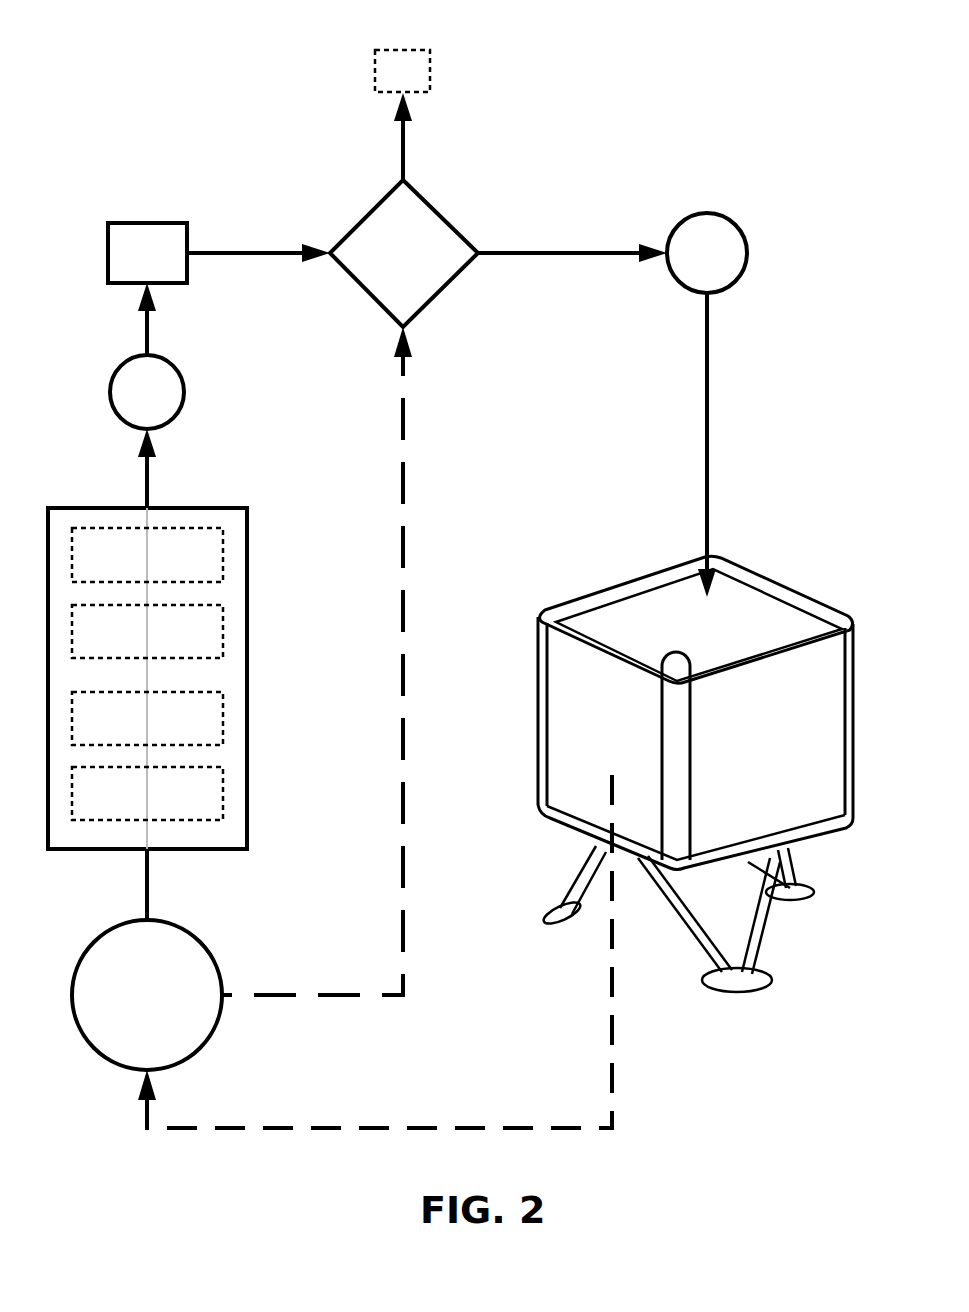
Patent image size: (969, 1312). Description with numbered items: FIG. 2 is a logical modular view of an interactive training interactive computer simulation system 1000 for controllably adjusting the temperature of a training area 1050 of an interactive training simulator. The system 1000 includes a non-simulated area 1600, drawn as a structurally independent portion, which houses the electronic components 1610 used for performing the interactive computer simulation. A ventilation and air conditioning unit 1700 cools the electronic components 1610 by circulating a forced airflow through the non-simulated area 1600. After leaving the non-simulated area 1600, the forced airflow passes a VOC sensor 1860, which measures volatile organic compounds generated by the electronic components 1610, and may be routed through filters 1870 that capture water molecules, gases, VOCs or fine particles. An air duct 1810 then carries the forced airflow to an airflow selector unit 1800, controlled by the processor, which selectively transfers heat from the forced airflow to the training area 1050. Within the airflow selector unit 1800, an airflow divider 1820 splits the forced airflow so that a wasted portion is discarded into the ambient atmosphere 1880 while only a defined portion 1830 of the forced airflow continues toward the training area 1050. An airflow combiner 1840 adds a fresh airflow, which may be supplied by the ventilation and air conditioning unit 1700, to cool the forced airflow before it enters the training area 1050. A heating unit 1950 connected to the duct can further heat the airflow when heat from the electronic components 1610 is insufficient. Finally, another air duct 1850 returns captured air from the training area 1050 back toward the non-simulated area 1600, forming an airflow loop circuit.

The interactive training interactive computer simulation system 1000 is at (238, 97).
The training area 1050 is at (660, 603).
The non-simulated area 1600 is at (248, 680).
The electronic components 1610 is at (224, 550).
The ventilation and air conditioning unit 1700 is at (212, 955).
The airflow selector unit 1800 is at (443, 212).
The air duct 1810 is at (264, 250).
The airflow divider 1820 is at (405, 142).
The defined portion of the forced airflow 1830 is at (560, 252).
The airflow combiner 1840 is at (406, 435).
The air duct 1850 is at (462, 1128).
The VOC sensor 1860 is at (186, 392).
The filters 1870 is at (190, 224).
The ambient atmosphere 1880 is at (431, 71).
The heating unit 1950 is at (748, 253).